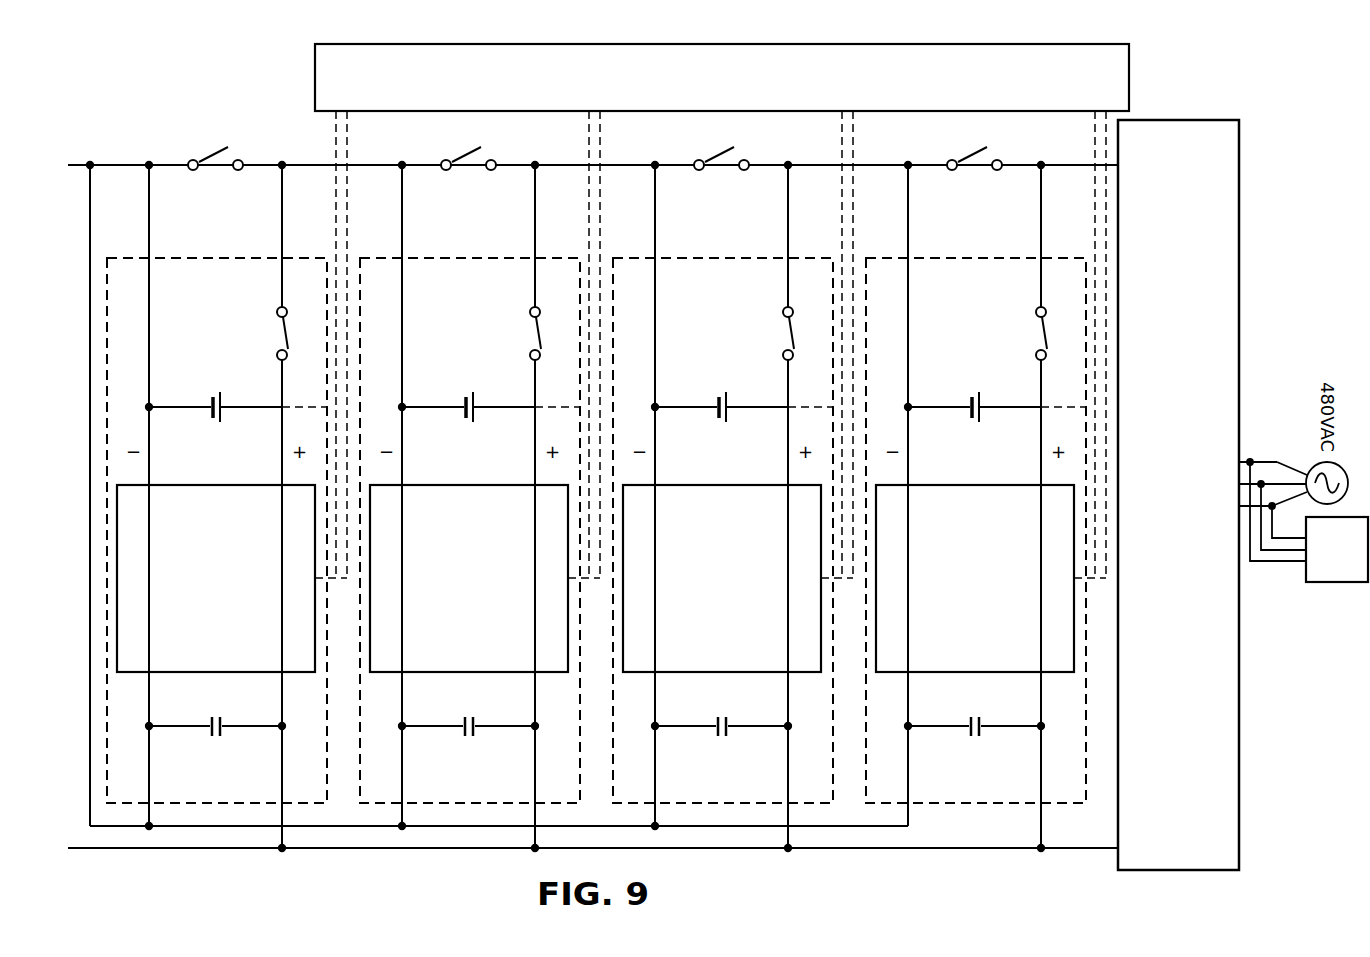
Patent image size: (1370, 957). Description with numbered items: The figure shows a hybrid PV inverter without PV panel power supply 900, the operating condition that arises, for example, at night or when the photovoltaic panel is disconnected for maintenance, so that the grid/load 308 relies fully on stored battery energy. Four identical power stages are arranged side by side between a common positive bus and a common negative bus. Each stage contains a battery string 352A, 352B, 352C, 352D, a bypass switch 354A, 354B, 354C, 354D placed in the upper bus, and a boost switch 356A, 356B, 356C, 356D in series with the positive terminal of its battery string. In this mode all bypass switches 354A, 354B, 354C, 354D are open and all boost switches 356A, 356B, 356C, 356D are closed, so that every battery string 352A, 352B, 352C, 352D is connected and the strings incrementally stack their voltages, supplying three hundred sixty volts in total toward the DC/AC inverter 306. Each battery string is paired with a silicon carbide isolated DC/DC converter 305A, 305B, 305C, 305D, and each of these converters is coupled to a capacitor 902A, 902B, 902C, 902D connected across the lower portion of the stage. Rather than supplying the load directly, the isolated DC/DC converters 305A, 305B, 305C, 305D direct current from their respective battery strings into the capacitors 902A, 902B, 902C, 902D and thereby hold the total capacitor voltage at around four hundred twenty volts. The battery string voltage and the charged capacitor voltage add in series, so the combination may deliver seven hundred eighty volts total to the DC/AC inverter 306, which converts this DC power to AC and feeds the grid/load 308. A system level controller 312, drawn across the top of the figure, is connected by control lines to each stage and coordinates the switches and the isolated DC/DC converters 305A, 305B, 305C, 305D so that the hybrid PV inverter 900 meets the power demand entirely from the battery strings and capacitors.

The hybrid PV inverter without PV panel power supply 900 is at (193, 72).
The system level controller 312 is at (1130, 76).
The bypass switch 354A is at (221, 170).
The bypass switch 354B is at (465, 192).
The bypass switch 354C is at (718, 192).
The bypass switch 354D is at (971, 192).
The boost switch 356A is at (283, 335).
The boost switch 356B is at (494, 333).
The boost switch 356C is at (747, 333).
The boost switch 356D is at (1000, 333).
The battery string 352A is at (178, 409).
The battery string 352B is at (490, 415).
The battery string 352C is at (743, 415).
The battery string 352D is at (996, 415).
The isolated DC/DC converter 305A is at (245, 624).
The isolated DC/DC converter 305B is at (469, 578).
The isolated DC/DC converter 305C is at (722, 578).
The isolated DC/DC converter 305D is at (975, 578).
The capacitor 902A is at (170, 729).
The capacitor 902B is at (469, 739).
The capacitor 902C is at (722, 739).
The capacitor 902D is at (975, 739).
The DC/AC inverter 306 is at (1158, 543).
The grid/load 308 is at (1338, 585).